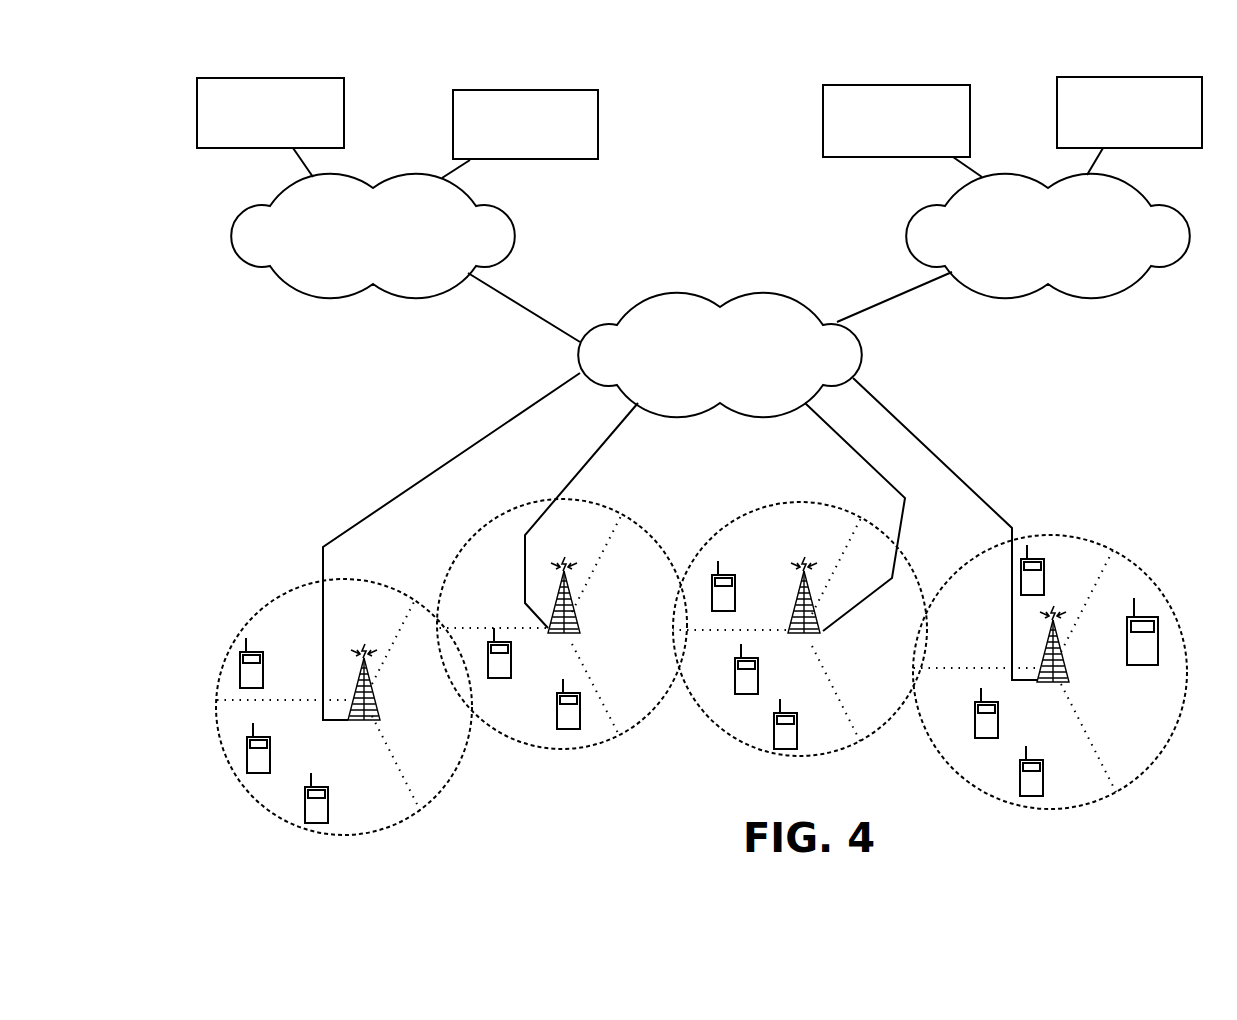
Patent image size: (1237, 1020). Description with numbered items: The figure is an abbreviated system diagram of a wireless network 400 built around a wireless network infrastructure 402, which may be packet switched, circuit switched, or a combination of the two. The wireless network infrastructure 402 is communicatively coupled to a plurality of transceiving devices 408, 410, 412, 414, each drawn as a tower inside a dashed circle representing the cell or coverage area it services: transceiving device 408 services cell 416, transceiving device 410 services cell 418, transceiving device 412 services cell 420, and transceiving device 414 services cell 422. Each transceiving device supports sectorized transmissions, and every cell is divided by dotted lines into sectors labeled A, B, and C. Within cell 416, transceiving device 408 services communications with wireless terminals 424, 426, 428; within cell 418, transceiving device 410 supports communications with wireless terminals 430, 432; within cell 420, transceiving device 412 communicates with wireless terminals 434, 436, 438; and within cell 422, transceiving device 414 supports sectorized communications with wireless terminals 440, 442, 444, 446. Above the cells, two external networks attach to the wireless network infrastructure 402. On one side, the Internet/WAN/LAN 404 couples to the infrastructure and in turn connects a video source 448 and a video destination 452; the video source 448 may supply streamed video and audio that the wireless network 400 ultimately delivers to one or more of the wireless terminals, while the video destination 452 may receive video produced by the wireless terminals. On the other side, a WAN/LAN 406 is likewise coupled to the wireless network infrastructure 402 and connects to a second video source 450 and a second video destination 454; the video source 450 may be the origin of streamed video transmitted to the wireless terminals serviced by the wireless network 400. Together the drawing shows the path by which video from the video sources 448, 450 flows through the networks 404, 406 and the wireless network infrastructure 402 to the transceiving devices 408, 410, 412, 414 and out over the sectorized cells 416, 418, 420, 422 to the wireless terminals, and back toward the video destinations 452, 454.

The wireless network 400 is at (587, 812).
The wireless network infrastructure 402 is at (808, 308).
The Internet/WAN/LAN 404 is at (508, 212).
The WAN/LAN 406 is at (1175, 209).
The transceiving device 408 is at (364, 724).
The transceiving device 410 is at (580, 621).
The transceiving device 412 is at (812, 633).
The transceiving device 414 is at (1064, 682).
The cell/coverage area 416 is at (256, 616).
The cell/coverage area 418 is at (622, 512).
The cell/coverage area 420 is at (807, 503).
The cell/coverage area 422 is at (1063, 534).
The wireless terminal 424 is at (263, 679).
The wireless terminal 426 is at (270, 765).
The wireless terminal 428 is at (328, 814).
The wireless terminal 430 is at (511, 668).
The wireless terminal 432 is at (580, 721).
The wireless terminal 434 is at (735, 601).
The wireless terminal 436 is at (758, 686).
The wireless terminal 438 is at (797, 741).
The wireless terminal 440 is at (999, 727).
The wireless terminal 442 is at (1043, 786).
The wireless terminal 444 is at (1045, 584).
The wireless terminal 446 is at (1158, 641).
The video source 448 is at (327, 78).
The video source 450 is at (915, 85).
The video destination 452 is at (560, 90).
The video destination 454 is at (1167, 77).